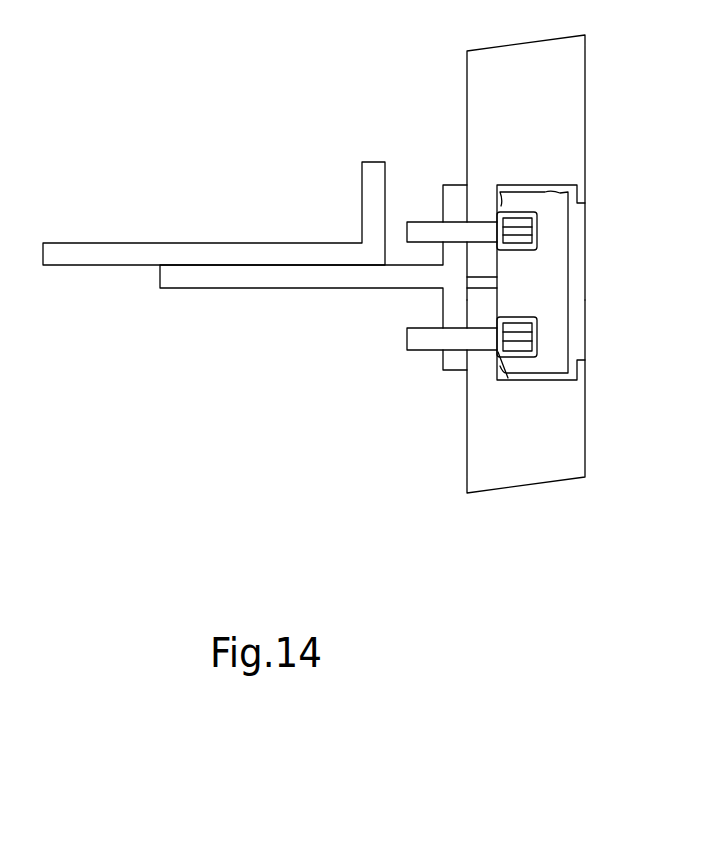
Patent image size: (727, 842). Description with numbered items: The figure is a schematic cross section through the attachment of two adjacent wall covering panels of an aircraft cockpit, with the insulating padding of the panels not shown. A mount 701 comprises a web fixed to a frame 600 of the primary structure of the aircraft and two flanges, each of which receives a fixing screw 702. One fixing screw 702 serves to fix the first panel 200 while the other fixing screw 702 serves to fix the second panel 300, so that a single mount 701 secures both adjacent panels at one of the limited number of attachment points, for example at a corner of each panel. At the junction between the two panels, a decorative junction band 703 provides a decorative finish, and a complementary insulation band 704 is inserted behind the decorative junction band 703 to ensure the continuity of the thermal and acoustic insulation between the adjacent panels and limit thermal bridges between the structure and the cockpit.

The first panel 200 is at (480, 92).
The second panel 300 is at (485, 447).
The frame 600 is at (195, 250).
The mount 701 is at (342, 275).
The fixing screw 702 is at (480, 232).
The decorative junction band 703 is at (583, 230).
The complementary insulation band 704 is at (543, 288).